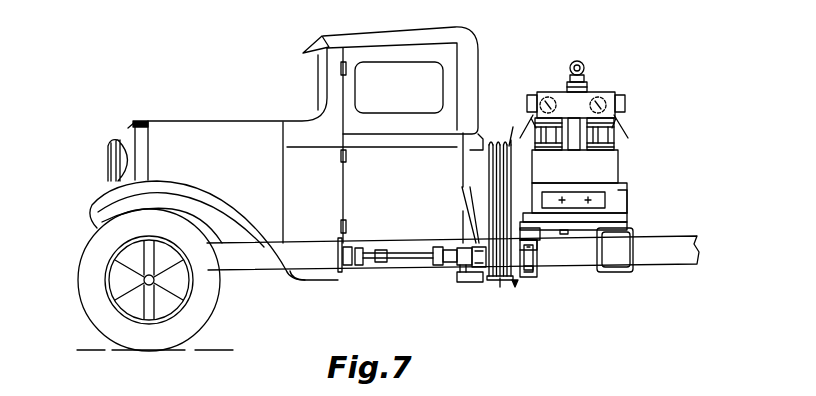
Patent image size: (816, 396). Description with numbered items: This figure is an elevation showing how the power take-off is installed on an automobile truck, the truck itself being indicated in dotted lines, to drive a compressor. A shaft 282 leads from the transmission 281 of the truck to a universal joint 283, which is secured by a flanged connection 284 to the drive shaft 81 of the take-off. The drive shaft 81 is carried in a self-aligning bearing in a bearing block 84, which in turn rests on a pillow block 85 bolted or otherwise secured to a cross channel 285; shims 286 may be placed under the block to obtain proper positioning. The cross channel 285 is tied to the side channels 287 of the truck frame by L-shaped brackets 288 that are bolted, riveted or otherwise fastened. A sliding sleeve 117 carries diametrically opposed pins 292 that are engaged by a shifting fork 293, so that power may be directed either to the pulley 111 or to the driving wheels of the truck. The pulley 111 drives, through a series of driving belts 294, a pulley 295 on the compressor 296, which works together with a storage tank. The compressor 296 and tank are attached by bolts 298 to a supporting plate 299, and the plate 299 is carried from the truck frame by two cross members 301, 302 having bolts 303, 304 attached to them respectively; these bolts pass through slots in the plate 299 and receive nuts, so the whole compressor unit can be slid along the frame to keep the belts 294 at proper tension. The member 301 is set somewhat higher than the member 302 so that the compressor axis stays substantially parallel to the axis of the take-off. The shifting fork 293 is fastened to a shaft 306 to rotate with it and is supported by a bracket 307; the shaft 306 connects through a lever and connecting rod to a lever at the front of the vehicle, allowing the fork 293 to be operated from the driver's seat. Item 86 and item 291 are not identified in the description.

The drive shaft 81 is at (474, 268).
The bearing block 84 is at (463, 247).
The pillow block 85 is at (468, 270).
The link 86 is at (463, 211).
The pulley 111 is at (500, 288).
The sliding sleeve 117 is at (518, 283).
The transmission 281 is at (337, 258).
The shaft 282 is at (402, 260).
The universal joint 283 is at (437, 267).
The flanged connection 284 is at (453, 265).
The cross channel 285 is at (460, 267).
The shims 286 is at (463, 283).
The side channels 287 is at (373, 243).
The L-shaped brackets 288 is at (465, 188).
The bracket 291 is at (538, 237).
The pins 292 is at (536, 268).
The shifting fork 293 is at (528, 247).
The driving belts 294 is at (490, 170).
The pulley 295 is at (504, 129).
The compressor 296 is at (603, 141).
The bolts 298 is at (597, 215).
The supporting plate 299 is at (627, 221).
The cross member 301 is at (518, 182).
The cross member 302 is at (630, 226).
The bolts 303 is at (565, 232).
The bolts 304 is at (626, 205).
The shaft 306 is at (534, 247).
The bracket 307 is at (537, 268).